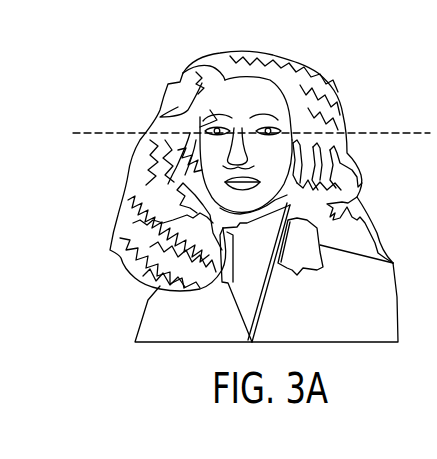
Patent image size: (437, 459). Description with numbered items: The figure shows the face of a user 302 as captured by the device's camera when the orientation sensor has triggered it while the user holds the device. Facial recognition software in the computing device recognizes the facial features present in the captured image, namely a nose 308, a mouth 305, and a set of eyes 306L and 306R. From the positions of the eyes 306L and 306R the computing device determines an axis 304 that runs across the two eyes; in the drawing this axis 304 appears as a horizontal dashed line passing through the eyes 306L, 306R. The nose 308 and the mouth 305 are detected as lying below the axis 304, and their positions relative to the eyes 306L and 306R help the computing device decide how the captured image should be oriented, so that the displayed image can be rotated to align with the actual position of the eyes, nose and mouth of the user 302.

The user 302 is at (283, 54).
The axis 304 is at (398, 128).
The mouth 305 is at (258, 184).
The left eye 306L is at (205, 129).
The right eye 306R is at (278, 127).
The nose 308 is at (232, 150).